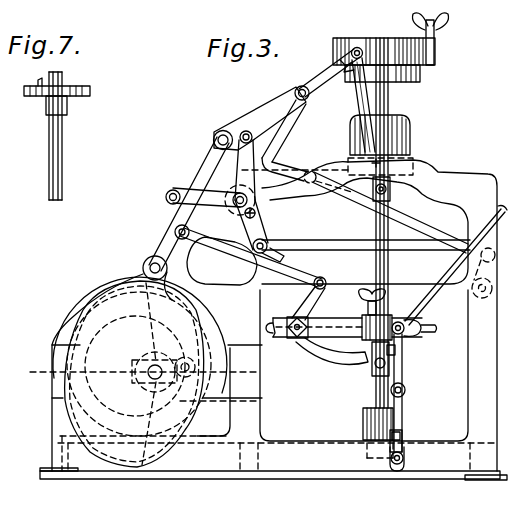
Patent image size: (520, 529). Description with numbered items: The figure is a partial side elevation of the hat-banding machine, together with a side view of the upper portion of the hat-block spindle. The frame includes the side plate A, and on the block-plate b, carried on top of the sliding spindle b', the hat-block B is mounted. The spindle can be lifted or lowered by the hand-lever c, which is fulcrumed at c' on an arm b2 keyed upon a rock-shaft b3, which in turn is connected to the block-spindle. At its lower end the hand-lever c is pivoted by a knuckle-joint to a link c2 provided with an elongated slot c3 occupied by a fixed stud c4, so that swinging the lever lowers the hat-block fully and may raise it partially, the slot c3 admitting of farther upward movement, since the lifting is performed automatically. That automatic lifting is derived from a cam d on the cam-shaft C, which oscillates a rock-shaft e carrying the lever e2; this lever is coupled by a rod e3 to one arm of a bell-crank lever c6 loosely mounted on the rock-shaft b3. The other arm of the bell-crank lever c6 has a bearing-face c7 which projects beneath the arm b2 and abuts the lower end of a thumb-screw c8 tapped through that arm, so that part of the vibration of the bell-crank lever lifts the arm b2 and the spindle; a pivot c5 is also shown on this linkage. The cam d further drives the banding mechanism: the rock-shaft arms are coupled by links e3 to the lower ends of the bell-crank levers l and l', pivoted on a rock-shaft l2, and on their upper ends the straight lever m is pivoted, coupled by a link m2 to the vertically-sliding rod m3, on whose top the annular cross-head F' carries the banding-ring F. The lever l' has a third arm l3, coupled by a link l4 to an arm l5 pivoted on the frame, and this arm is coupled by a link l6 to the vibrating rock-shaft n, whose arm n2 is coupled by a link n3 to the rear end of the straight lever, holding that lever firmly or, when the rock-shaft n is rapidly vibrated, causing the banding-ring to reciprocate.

In FIG. 7, the block-plate b is at (57, 83).
In FIG. 7, the sliding spindle b' is at (62, 136).
In FIG. 3, the side plate A is at (273, 458).
In FIG. 3, the hat-block B is at (386, 145).
In FIG. 3, the cam-shaft C is at (156, 370).
In FIG. 3, the cam d is at (134, 374).
In FIG. 3, the annular cross-head F' is at (391, 39).
In FIG. 3, the banding-ring F is at (400, 74).
In FIG. 3, the straight lever m is at (325, 82).
In FIG. 3, the link m2 is at (362, 98).
In FIG. 3, the vertically-sliding rod m3 is at (389, 100).
In FIG. 3, the bell-crank lever l is at (260, 118).
In FIG. 3, the rock-shaft l2 is at (213, 136).
In FIG. 3, the bell-crank lever l' is at (274, 131).
In FIG. 3, the third arm l3 is at (285, 163).
In FIG. 3, the link l4 is at (390, 212).
In FIG. 3, the arm l5 is at (490, 274).
In FIG. 3, the link l6 is at (366, 240).
In FIG. 3, the vibrating rock-shaft n is at (256, 213).
In FIG. 3, the arm n2 is at (236, 214).
In FIG. 3, the link n3 is at (257, 187).
In FIG. 3, the rock-shaft e is at (146, 262).
In FIG. 3, the lever e2 is at (170, 214).
In FIG. 3, the rod e3 is at (206, 190).
In FIG. 3, the hand-lever c is at (455, 326).
In FIG. 3, the fulcrum c' is at (414, 315).
In FIG. 3, the link c2 is at (403, 414).
In FIG. 3, the elongated slot c3 is at (406, 462).
In FIG. 3, the fixed stud c4 is at (393, 456).
In FIG. 3, the connecting rod c5 is at (253, 258).
In FIG. 3, the bell-crank lever c6 is at (322, 370).
In FIG. 3, the bearing-face c7 is at (365, 357).
In FIG. 3, the thumb-screw c8 is at (364, 289).
In FIG. 3, the arm b2 is at (344, 317).
In FIG. 3, the rock-shaft b3 is at (298, 336).